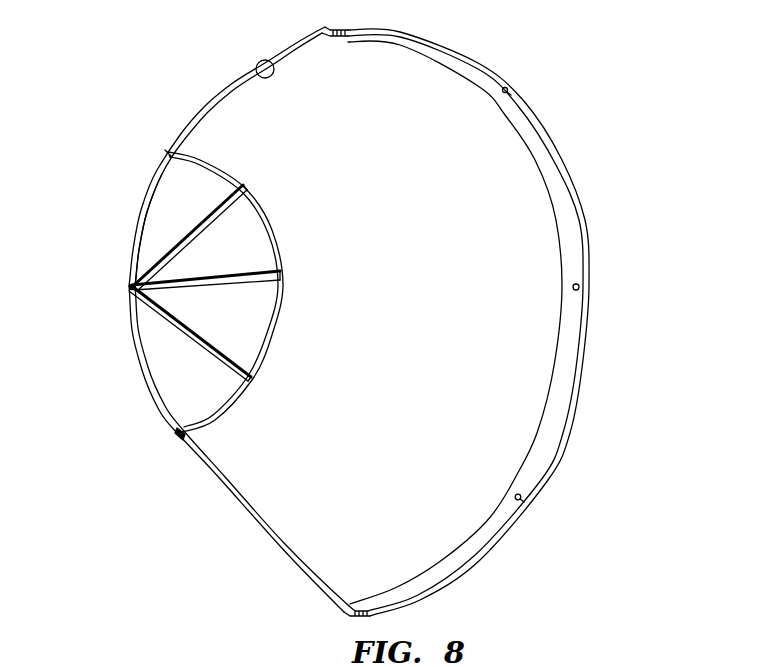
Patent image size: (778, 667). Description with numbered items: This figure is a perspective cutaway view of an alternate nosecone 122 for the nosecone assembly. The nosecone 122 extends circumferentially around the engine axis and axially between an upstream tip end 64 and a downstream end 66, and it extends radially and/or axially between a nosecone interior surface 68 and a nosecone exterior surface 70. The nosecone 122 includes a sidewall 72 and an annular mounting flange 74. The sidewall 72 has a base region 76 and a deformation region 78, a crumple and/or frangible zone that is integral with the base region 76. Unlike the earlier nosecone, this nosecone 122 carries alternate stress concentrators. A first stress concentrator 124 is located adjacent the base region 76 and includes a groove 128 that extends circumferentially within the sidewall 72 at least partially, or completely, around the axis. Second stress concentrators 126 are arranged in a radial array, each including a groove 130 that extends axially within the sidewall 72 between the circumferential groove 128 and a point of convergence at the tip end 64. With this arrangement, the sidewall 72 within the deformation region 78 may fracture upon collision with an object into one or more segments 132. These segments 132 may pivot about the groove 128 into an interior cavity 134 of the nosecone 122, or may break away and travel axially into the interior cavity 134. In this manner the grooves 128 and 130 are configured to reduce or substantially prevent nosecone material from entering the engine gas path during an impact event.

The nosecone 122 is at (584, 92).
The mounting flange 74 is at (590, 194).
The downstream end 66 is at (582, 287).
The nosecone interior surface 68 is at (260, 58).
The nosecone exterior surface 70 is at (228, 78).
The sidewall 72 is at (207, 100).
The base region 76 is at (250, 542).
The deformation region 78 is at (154, 399).
The upstream tip end 64 is at (130, 286).
The first stress concentrator 124 is at (182, 440).
The second stress concentrators 126 is at (173, 232).
The groove 128 is at (255, 392).
The groove 130 is at (143, 251).
The segments 132 is at (180, 193).
The interior cavity 134 is at (486, 424).